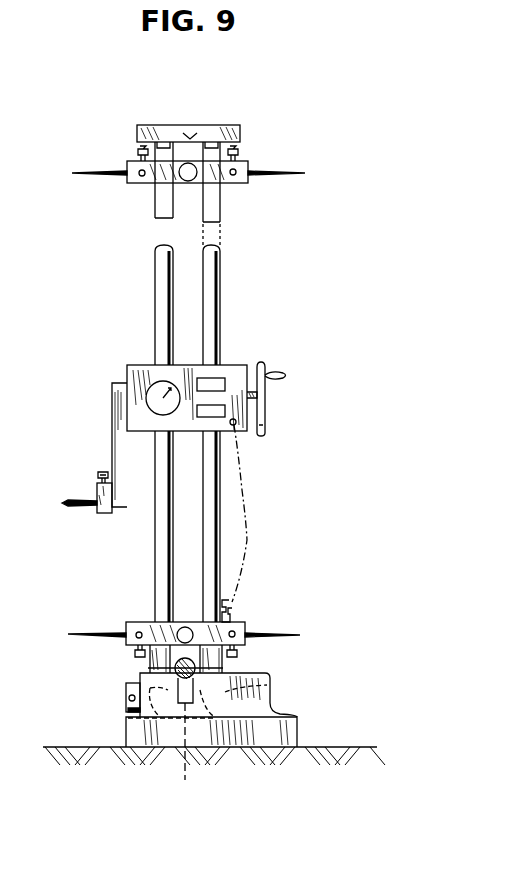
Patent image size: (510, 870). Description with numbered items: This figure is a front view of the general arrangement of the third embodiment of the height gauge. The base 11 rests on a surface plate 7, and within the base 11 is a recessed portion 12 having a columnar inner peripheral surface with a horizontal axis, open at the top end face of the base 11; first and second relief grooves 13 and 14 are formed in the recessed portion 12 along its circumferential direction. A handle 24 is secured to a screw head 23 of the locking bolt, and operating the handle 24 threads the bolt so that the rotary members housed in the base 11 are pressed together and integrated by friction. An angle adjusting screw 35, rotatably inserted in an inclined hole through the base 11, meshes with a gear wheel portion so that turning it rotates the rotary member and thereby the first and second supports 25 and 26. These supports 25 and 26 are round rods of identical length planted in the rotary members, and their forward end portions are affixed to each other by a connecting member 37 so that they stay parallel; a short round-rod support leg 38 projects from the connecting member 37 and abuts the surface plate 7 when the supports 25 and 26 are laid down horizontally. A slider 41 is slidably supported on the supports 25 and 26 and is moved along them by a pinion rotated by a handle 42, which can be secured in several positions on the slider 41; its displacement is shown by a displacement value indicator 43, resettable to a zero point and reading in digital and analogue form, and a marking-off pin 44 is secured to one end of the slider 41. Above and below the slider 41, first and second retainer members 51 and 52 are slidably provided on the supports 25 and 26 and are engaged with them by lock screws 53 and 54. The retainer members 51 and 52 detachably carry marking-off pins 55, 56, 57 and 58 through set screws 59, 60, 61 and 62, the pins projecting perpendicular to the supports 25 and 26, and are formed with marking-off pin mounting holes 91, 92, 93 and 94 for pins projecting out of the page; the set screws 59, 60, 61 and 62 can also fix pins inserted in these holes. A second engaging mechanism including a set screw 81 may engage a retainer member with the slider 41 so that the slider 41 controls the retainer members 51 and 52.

The surface plate 7 is at (64, 747).
The base 11 is at (268, 700).
The recessed portion 12 is at (189, 756).
The first relief groove 13 is at (128, 718).
The second relief groove 14 is at (270, 683).
The screw head 23 is at (126, 686).
The handle 24 is at (127, 698).
The first support 25 is at (157, 285).
The second support 26 is at (220, 292).
The angle adjusting screw 35 is at (183, 688).
The connecting member 37 is at (160, 135).
The support leg 38 is at (190, 135).
The slider 41 is at (133, 372).
The handle 42 is at (264, 364).
The displacement value indicator 43 is at (203, 380).
The marking-off pin 44 is at (76, 499).
The first retainer member 51 is at (228, 183).
The second retainer member 52 is at (148, 625).
The lock screw 53 is at (190, 182).
The lock screw 54 is at (185, 627).
The marking-off pin 55 is at (98, 174).
The marking-off pin 56 is at (270, 172).
The marking-off pin 57 is at (90, 634).
The marking-off pin 58 is at (300, 640).
The set screw 59 is at (143, 150).
The set screw 60 is at (234, 150).
The set screw 61 is at (134, 653).
The set screw 62 is at (238, 653).
The set screw 81 is at (256, 538).
The marking-off pin mounting hole 91 is at (141, 178).
The marking-off pin mounting hole 92 is at (240, 178).
The marking-off pin mounting hole 93 is at (136, 631).
The marking-off pin mounting hole 94 is at (235, 631).